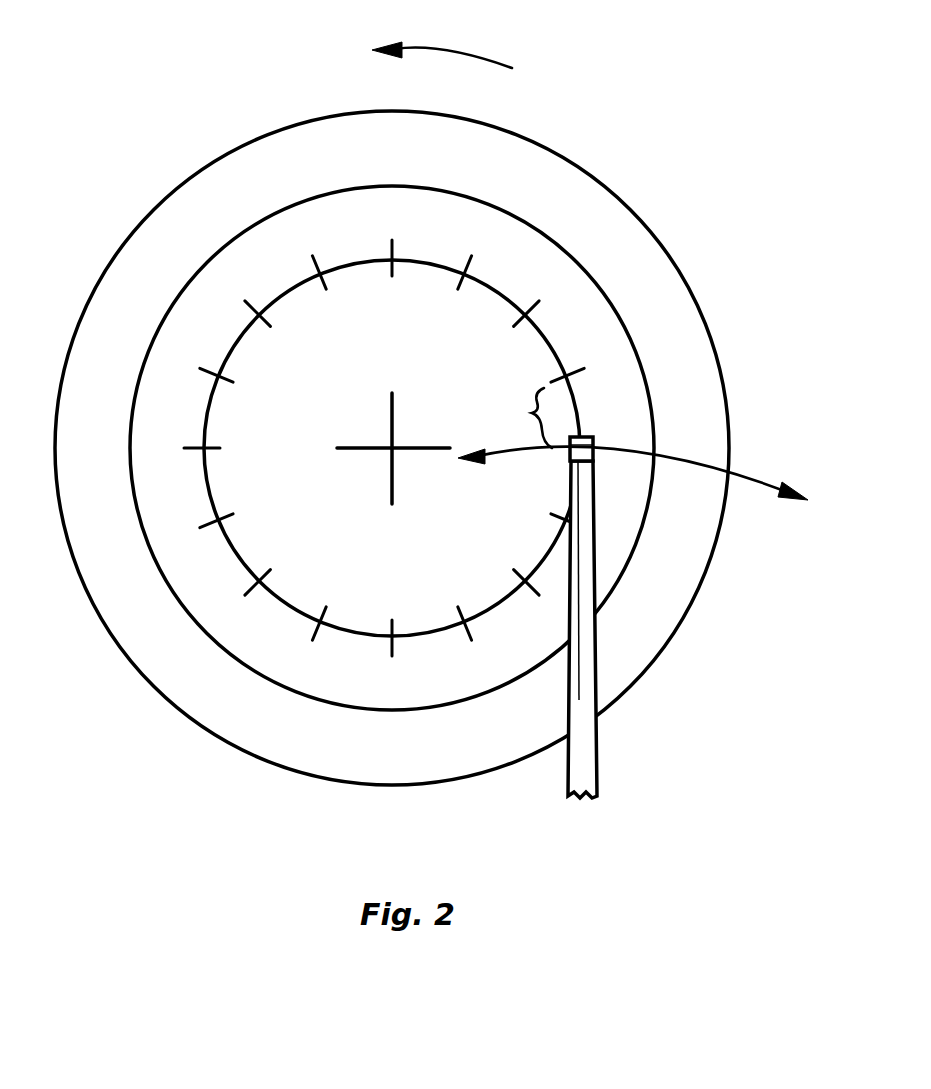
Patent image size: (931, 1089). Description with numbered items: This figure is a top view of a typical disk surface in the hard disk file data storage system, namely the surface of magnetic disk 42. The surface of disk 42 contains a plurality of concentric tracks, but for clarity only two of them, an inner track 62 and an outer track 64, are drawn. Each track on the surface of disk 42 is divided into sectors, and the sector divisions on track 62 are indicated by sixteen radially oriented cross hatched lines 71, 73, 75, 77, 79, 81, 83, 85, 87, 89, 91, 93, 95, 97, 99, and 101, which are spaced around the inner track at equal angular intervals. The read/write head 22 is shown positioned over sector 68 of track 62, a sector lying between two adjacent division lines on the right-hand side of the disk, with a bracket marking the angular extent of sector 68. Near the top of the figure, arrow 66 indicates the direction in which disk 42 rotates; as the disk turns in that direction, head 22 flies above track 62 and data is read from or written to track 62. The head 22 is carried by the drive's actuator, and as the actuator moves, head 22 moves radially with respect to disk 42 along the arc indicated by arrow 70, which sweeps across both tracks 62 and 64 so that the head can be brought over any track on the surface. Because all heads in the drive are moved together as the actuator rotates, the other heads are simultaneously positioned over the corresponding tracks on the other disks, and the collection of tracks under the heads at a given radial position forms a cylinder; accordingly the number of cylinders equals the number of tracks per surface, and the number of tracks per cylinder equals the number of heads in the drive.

The head 22 is at (680, 591).
The magnetic disk 42 is at (706, 320).
The track 62 is at (536, 327).
The track 64 is at (646, 377).
The arrow 66 is at (430, 50).
The sector 68 is at (519, 418).
The arrow 70 is at (760, 470).
The cross hatched line 71 is at (392, 245).
The cross hatched line 73 is at (470, 260).
The cross hatched line 75 is at (537, 304).
The cross hatched line 77 is at (604, 349).
The cross hatched line 79 is at (594, 452).
The cross hatched line 81 is at (570, 520).
The cross hatched line 83 is at (528, 580).
The cross hatched line 85 is at (470, 640).
The cross hatched line 87 is at (392, 652).
The cross hatched line 89 is at (313, 637).
The cross hatched line 91 is at (247, 592).
The cross hatched line 93 is at (204, 526).
The cross hatched line 95 is at (188, 448).
The cross hatched line 97 is at (205, 370).
The cross hatched line 99 is at (255, 272).
The cross hatched line 101 is at (315, 262).